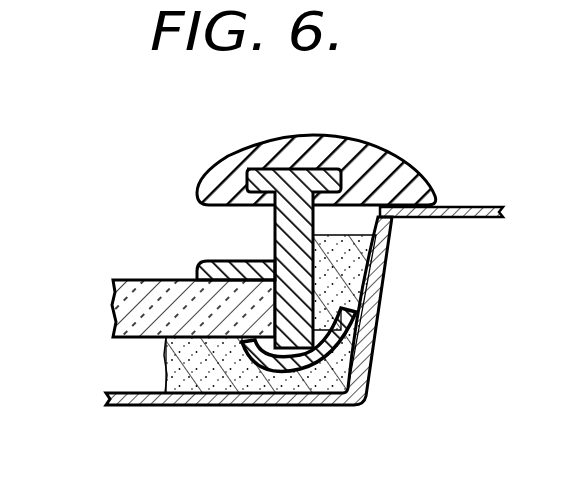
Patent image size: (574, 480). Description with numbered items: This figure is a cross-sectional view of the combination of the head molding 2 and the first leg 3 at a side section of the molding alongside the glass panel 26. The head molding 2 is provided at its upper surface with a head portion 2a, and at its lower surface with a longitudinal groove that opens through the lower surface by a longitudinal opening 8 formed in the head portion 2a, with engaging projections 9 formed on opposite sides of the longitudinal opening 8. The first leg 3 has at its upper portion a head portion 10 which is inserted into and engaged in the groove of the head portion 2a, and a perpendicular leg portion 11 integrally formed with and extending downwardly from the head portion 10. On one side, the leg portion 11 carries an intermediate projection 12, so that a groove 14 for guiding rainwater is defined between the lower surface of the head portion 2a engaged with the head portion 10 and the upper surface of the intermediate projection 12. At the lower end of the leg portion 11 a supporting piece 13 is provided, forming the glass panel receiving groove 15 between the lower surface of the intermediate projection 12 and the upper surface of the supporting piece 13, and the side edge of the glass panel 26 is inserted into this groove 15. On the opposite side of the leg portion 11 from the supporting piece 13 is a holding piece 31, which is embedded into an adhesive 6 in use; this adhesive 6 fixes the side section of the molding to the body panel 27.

The head molding 2 is at (400, 150).
The head portion 2a is at (360, 165).
The first leg 3 is at (368, 288).
The adhesive 6 is at (167, 407).
The longitudinal opening 8 is at (287, 165).
The engaging projections 9 is at (197, 187).
The head portion 10 is at (302, 165).
The leg portion 11 is at (365, 300).
The intermediate projection 12 is at (198, 262).
The supporting piece 13 is at (233, 405).
The groove for guiding rainwater 14 is at (255, 233).
The glass panel receiving groove 15 is at (285, 403).
The glass panel 26 is at (134, 293).
The body panel 27 is at (468, 223).
The holding piece 31 is at (340, 407).